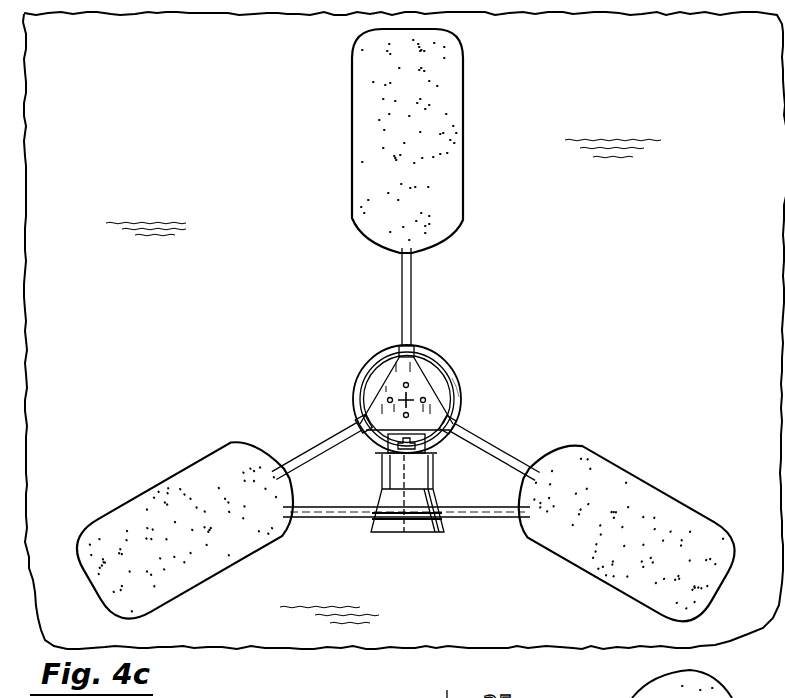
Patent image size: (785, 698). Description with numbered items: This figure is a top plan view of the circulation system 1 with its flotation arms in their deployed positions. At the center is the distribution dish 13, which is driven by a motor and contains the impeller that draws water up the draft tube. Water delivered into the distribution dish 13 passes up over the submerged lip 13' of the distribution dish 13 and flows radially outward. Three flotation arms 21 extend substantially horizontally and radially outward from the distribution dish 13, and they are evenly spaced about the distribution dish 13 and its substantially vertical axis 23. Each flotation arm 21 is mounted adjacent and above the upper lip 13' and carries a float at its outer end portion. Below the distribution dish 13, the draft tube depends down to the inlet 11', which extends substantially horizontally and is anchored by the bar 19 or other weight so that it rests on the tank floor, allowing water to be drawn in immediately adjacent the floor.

The circulation system 1 is at (638, 228).
The flotation arm 21 is at (670, 493).
The distribution dish 13 is at (370, 383).
The lip of the distribution dish 13' is at (498, 384).
The substantially vertical axis 23 is at (413, 397).
The inlet 11' is at (389, 523).
The bar 19 is at (474, 520).